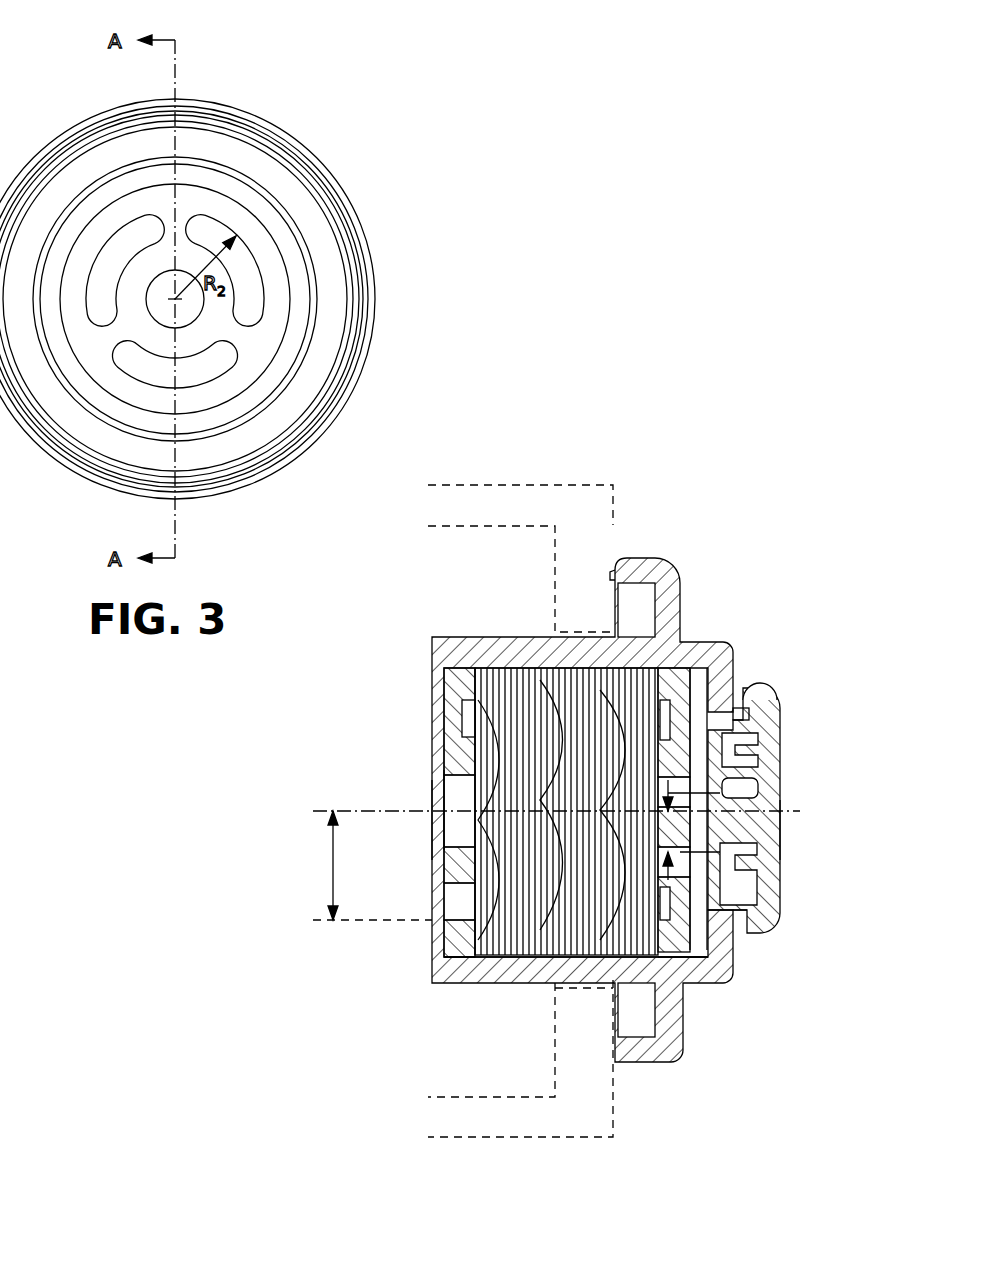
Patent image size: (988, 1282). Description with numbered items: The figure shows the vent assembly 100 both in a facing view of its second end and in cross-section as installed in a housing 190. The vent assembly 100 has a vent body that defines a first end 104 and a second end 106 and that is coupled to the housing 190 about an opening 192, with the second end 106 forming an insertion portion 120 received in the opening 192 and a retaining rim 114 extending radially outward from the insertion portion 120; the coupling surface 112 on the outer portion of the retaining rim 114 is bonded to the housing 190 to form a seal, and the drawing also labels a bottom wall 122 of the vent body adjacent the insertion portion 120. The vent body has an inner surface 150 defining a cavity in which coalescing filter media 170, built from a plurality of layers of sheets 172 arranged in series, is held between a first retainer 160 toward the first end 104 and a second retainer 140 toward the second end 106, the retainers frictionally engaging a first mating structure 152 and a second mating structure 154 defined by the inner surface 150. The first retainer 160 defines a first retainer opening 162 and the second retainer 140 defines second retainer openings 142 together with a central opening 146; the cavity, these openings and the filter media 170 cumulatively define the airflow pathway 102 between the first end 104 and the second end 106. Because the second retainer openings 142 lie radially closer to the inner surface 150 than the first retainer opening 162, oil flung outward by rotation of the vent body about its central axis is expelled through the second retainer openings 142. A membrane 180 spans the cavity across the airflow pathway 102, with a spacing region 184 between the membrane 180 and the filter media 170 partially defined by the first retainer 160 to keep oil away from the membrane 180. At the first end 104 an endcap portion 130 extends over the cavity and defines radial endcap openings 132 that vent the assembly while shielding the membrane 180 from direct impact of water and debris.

In FIG. 3, the vent assembly 100 is at (240, 56).
In FIG. 4, the vent assembly 100 is at (768, 575).
In FIG. 4, the airflow pathway 102 is at (460, 795).
In FIG. 4, the first end 104 is at (806, 832).
In FIG. 4, the second end 106 is at (422, 818).
In FIG. 3, the coupling surface 112 is at (372, 262).
In FIG. 4, the coupling surface 112 is at (618, 572).
In FIG. 3, the retaining rim 114 is at (322, 258).
In FIG. 4, the retaining rim 114 is at (667, 605).
In FIG. 3, the insertion portion 120 is at (331, 334).
In FIG. 4, the insertion portion 120 is at (442, 995).
In FIG. 4, the bottom wall 122 is at (490, 985).
In FIG. 4, the endcap portion 130 is at (848, 848).
In FIG. 4, the radial endcap openings 132 is at (742, 678).
In FIG. 3, the second retainer 140 is at (205, 205).
In FIG. 4, the second retainer 140 is at (465, 690).
In FIG. 3, the second retainer opening 142 is at (240, 258).
In FIG. 4, the second retainer opening 142 is at (450, 903).
In FIG. 3, the central opening 146 is at (197, 300).
In FIG. 4, the central opening 146 is at (455, 760).
In FIG. 4, the inner surface 150 is at (572, 960).
In FIG. 4, the first mating structure 152 is at (698, 962).
In FIG. 4, the second mating structure 154 is at (465, 958).
In FIG. 4, the first retainer 160 is at (745, 858).
In FIG. 4, the first retainer opening 162 is at (740, 792).
In FIG. 4, the coalescing filter media 170 is at (500, 665).
In FIG. 4, the layers of sheets 172 is at (465, 665).
In FIG. 4, the membrane 180 is at (745, 720).
In FIG. 4, the spacing region 184 is at (695, 668).
In FIG. 4, the housing 190 is at (590, 512).
In FIG. 4, the opening 192 is at (555, 632).